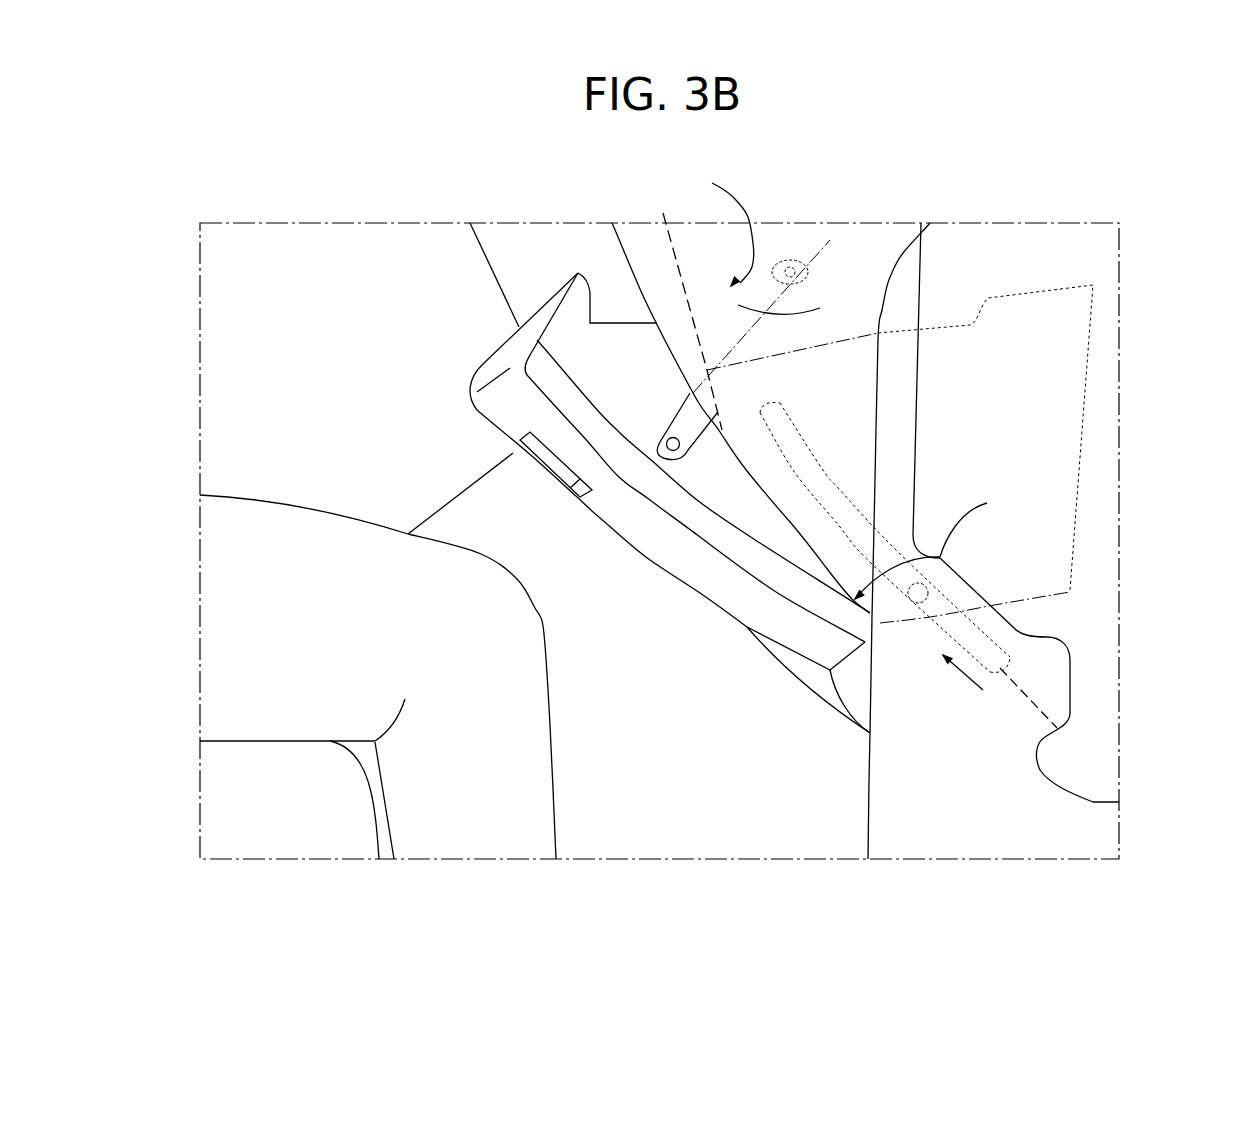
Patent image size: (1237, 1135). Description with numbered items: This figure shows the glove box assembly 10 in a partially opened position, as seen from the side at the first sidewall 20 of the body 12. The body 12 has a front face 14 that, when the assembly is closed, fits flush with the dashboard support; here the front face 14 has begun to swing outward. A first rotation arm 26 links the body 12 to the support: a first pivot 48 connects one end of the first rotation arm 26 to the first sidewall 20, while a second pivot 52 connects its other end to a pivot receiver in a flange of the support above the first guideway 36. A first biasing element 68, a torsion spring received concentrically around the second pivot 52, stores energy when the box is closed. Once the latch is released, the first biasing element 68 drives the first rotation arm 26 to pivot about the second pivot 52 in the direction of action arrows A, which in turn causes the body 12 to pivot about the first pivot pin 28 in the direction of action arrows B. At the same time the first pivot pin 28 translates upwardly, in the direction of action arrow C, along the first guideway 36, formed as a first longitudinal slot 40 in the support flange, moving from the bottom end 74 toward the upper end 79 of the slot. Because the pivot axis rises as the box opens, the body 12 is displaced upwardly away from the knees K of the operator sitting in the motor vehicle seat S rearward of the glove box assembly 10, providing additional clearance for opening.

The glove box assembly 10 is at (1068, 196).
The body 12 is at (477, 320).
The front face 14 is at (502, 413).
The first sidewall 20 is at (646, 389).
The first rotation arm 26 is at (663, 213).
The first pivot pin 28 is at (928, 585).
The first guideway 36 is at (858, 491).
The first longitudinal slot 40 is at (992, 652).
The first pivot 48 is at (667, 449).
The second pivot 52 is at (792, 260).
The first biasing element 68 is at (813, 260).
The bottom end 74 is at (1053, 728).
The upper end 79 is at (770, 407).
The action arrows A is at (755, 241).
The action arrows B is at (933, 544).
The action arrow C is at (963, 680).
The knees K is at (520, 598).
The motor vehicle seat S is at (268, 821).